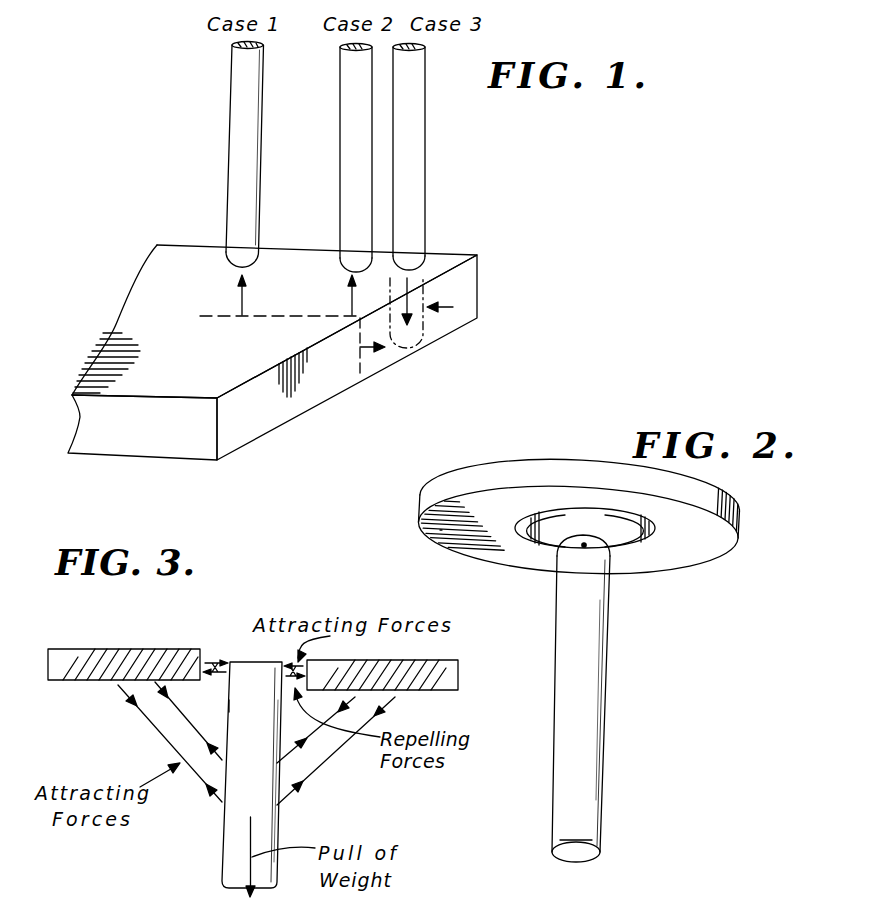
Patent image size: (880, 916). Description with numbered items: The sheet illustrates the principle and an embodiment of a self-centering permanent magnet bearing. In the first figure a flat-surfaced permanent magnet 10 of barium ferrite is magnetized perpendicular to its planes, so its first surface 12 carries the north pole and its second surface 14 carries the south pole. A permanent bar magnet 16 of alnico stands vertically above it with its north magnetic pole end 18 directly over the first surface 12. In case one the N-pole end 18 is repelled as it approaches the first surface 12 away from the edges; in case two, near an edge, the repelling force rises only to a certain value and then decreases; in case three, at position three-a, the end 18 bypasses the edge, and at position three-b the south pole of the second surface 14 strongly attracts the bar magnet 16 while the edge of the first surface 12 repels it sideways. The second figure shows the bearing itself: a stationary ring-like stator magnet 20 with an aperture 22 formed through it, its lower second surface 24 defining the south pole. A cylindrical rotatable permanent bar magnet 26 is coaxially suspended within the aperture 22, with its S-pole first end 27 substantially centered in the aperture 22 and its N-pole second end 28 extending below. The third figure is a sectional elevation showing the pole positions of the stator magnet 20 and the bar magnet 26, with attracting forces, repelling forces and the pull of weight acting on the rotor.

In FIG. 1, the flat-surfaced permanent magnet 10 is at (160, 314).
In FIG. 1, the first surface 12 is at (214, 380).
In FIG. 1, the second surface 14 is at (318, 418).
In FIG. 1, the permanent bar magnet 16 is at (232, 116).
In FIG. 1, the north magnetic pole end 18 is at (242, 235).
In FIG. 2, the stator magnet 20 is at (499, 470).
In FIG. 3, the stator magnet 20 is at (129, 634).
In FIG. 2, the aperture 22 is at (533, 541).
In FIG. 3, the aperture 22 is at (212, 660).
In FIG. 2, the second surface 24 is at (442, 528).
In FIG. 3, the second surface 24 is at (80, 681).
In FIG. 2, the rotatable permanent bar magnet 26 is at (598, 648).
In FIG. 3, the rotatable permanent bar magnet 26 is at (223, 862).
In FIG. 2, the first end 27 is at (584, 545).
In FIG. 3, the first end 27 is at (228, 705).
In FIG. 2, the second end 28 is at (600, 820).